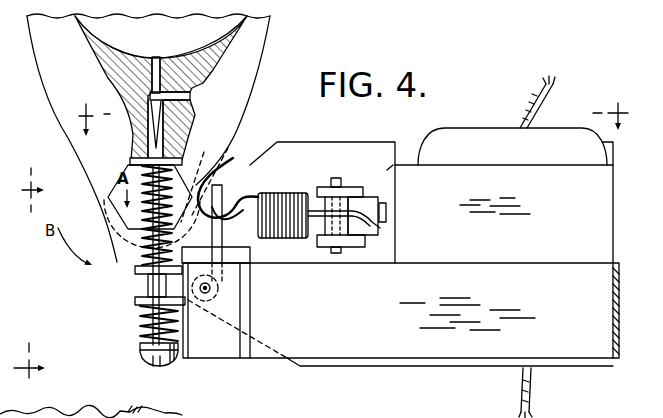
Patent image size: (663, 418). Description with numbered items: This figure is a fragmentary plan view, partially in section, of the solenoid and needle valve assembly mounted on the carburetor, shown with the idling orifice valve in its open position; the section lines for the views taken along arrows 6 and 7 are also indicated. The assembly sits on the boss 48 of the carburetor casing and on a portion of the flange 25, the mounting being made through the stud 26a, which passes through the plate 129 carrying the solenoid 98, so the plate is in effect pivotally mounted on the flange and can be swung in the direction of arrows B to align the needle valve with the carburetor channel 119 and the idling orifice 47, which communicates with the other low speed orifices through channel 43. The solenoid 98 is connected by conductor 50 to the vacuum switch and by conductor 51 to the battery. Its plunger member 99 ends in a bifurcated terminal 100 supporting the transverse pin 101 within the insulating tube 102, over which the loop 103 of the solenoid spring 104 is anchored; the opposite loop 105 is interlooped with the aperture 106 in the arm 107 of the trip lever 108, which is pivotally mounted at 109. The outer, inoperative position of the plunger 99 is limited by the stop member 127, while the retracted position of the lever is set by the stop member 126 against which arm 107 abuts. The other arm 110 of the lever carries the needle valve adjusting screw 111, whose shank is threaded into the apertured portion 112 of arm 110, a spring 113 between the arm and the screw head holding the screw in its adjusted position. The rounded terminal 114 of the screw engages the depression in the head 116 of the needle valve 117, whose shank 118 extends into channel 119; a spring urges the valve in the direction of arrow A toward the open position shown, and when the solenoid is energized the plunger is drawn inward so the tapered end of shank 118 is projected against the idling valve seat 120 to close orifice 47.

The flange 25 is at (70, 132).
The idling valve seat 120 is at (153, 56).
The idling orifice 47 is at (154, 57).
The channel 43 is at (190, 97).
The carburetor channel 119 is at (151, 94).
The shank 118 is at (150, 116).
The boss 48 is at (188, 125).
The section line 7- 7 is at (351, 113).
The section line 6- 6 is at (27, 279).
The stud 26a is at (108, 197).
The plate 129 is at (113, 233).
The needle valve 117 is at (170, 196).
The head 116 is at (143, 260).
The terminal 114 is at (135, 270).
The apertured portion 112 is at (147, 289).
The arm 110 is at (135, 300).
The spring 113 is at (145, 332).
The needle valve adjusting screw 111 is at (143, 353).
The loop 105 is at (231, 160).
The aperture 106 is at (220, 222).
The arm 107 is at (214, 206).
The solenoid spring 104 is at (278, 193).
The insulating tube 102 is at (347, 204).
The transverse pin 101 is at (334, 178).
The bifurcated terminal 100 is at (322, 247).
The loop 103 is at (360, 218).
The stop member 127 is at (386, 213).
The plunger member 99 is at (374, 252).
The stop member 126 is at (207, 249).
The trip lever 108 is at (231, 288).
The pivot 109 is at (203, 302).
The solenoid 98 is at (468, 119).
The conductor 50 is at (543, 93).
The conductor 51 is at (533, 394).